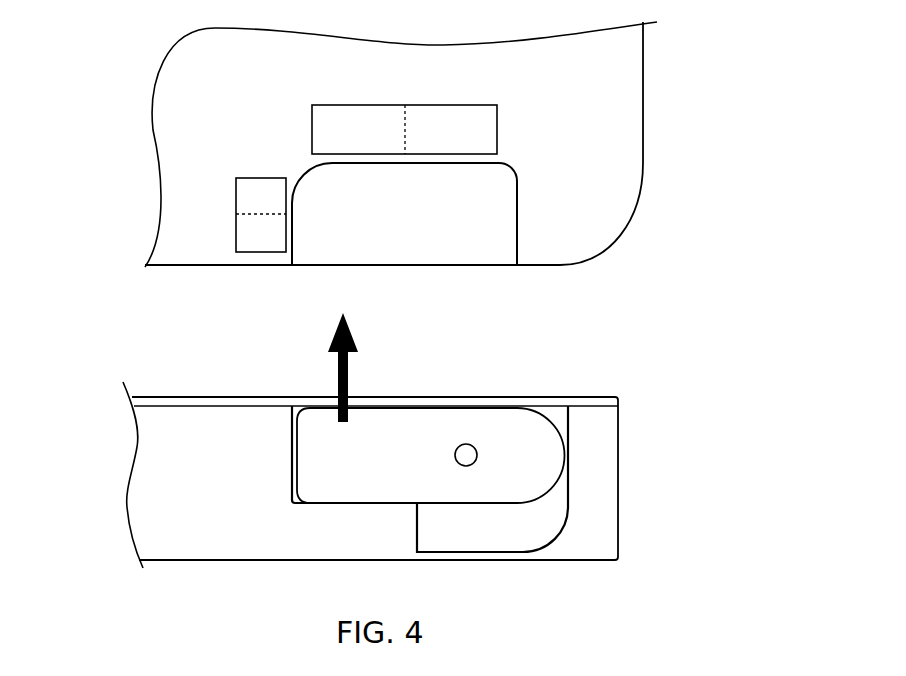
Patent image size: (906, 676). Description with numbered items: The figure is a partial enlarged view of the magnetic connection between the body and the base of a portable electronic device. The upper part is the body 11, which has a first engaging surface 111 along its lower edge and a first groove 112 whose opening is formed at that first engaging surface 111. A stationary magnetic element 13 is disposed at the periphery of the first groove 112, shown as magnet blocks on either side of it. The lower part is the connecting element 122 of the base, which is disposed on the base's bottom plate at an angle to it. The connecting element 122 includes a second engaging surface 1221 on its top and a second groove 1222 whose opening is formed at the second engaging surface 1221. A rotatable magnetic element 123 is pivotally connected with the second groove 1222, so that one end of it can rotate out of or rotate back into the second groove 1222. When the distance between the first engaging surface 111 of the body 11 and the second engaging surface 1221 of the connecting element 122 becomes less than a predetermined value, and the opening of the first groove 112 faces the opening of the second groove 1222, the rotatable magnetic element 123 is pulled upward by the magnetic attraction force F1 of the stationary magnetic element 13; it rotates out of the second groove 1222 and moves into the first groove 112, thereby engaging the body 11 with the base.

The body 11 is at (615, 60).
The first engaging surface 111 is at (172, 270).
The first groove 112 is at (327, 190).
The stationary magnetic element 13 is at (237, 182).
The magnetic attraction force F1 is at (335, 375).
The connecting element 122 is at (597, 438).
The second engaging surface 1221 is at (593, 397).
The second groove 1222 is at (555, 415).
The rotatable magnetic element 123 is at (315, 466).